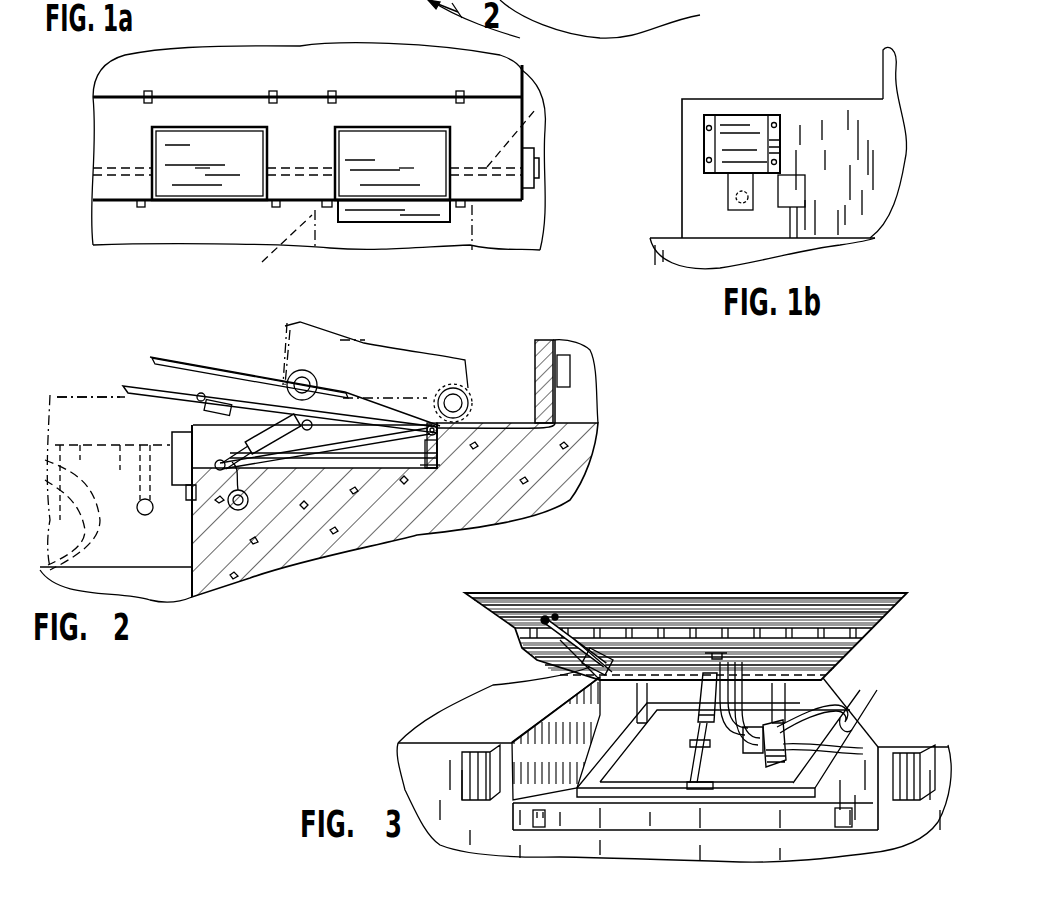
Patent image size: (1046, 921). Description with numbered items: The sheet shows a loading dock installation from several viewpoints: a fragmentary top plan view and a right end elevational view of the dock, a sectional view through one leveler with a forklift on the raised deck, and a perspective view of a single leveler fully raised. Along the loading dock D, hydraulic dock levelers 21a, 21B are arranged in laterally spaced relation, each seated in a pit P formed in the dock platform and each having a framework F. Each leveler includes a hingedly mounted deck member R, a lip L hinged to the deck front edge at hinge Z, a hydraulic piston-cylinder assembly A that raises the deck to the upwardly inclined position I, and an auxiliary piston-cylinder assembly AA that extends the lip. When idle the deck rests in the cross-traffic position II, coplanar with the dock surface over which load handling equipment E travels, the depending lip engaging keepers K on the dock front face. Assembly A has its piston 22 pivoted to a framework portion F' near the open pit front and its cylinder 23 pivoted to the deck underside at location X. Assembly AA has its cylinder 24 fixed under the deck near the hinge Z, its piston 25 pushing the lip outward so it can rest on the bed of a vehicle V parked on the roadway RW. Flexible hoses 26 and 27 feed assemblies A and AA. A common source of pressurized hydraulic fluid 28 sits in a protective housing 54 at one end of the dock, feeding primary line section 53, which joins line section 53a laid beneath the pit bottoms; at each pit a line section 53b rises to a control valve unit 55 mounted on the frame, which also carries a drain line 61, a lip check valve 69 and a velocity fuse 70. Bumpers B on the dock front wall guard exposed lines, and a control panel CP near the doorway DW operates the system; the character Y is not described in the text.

In FIG. 1a, the hydraulic dock leveler 21a is at (468, 121).
In FIG. 1a, the hydraulic dock leveler 21B is at (176, 203).
In FIG. 1a, the source of pressurized hydraulic fluid 28 is at (542, 156).
In FIG. 1b, the source of pressurized hydraulic fluid 28 is at (777, 112).
In FIG. 1a, the primary line section 53a is at (550, 112).
In FIG. 2, the primary line section 53a is at (230, 545).
In FIG. 3, the primary line section 53a is at (860, 745).
In FIG. 1b, the primary line section 53 is at (730, 190).
In FIG. 1b, the protective housing 54 is at (752, 140).
In FIG. 2, the cylinder 24 is at (222, 398).
In FIG. 3, the cylinder 24 is at (593, 653).
In FIG. 2, the flexible high pressure hose 26 is at (300, 452).
In FIG. 3, the flexible high pressure hose 26 is at (753, 755).
In FIG. 2, the line section 53b is at (242, 510).
In FIG. 3, the piston 25 is at (565, 615).
In FIG. 3, the flexible high pressure hose 27 is at (690, 655).
In FIG. 3, the adjustable lip check valve 69 is at (752, 717).
In FIG. 3, the control valve unit 55 is at (764, 713).
In FIG. 3, the drain line 61 is at (857, 668).
In FIG. 3, the cylinder 23 is at (698, 720).
In FIG. 3, the piston 22 is at (687, 763).
In FIG. 3, the velocity fuse 70 is at (787, 760).
In FIG. 1a, the doorway DW is at (148, 91).
In FIG. 2, the doorway DW is at (545, 340).
In FIG. 1a, the roadway RW is at (232, 226).
In FIG. 1b, the roadway RW is at (672, 240).
In FIG. 2, the roadway RW is at (132, 545).
In FIG. 1a, the cross-traffic position II is at (213, 116).
In FIG. 1a, the upwardly inclined position I is at (366, 156).
In FIG. 2, the upwardly inclined position I is at (378, 408).
In FIG. 3, the upwardly inclined position I is at (476, 618).
In FIG. 1a, the deck member R is at (304, 157).
In FIG. 2, the deck member R is at (258, 392).
In FIG. 1a, the pit P is at (155, 162).
In FIG. 2, the pit P is at (409, 462).
In FIG. 3, the pit P is at (847, 722).
In FIG. 1a, the lip L is at (322, 252).
In FIG. 2, the lip L is at (140, 383).
In FIG. 3, the lip L is at (880, 590).
In FIG. 1a, the vehicle V is at (279, 244).
In FIG. 1a, the bumper B is at (468, 208).
In FIG. 2, the bumper B is at (166, 530).
In FIG. 3, the bumper B is at (462, 762).
In FIG. 1b, the loading dock D is at (673, 121).
In FIG. 2, the hinge Z is at (193, 390).
In FIG. 2, the auxiliary piston-cylinder assembly AA is at (190, 414).
In FIG. 3, the auxiliary piston-cylinder assembly AA is at (607, 647).
In FIG. 2, the piston-cylinder assembly A is at (246, 437).
In FIG. 3, the piston-cylinder assembly A is at (692, 689).
In FIG. 2, the framework F is at (516, 473).
In FIG. 3, the framework F is at (641, 757).
In FIG. 2, the framework portion F' is at (164, 466).
In FIG. 3, the framework portion F' is at (709, 802).
In FIG. 2, the interior Y is at (95, 492).
In FIG. 2, the load handling equipment E is at (470, 356).
In FIG. 2, the control panel CP is at (570, 370).
In FIG. 3, the location X is at (720, 652).
In FIG. 3, the keeper K is at (540, 656).